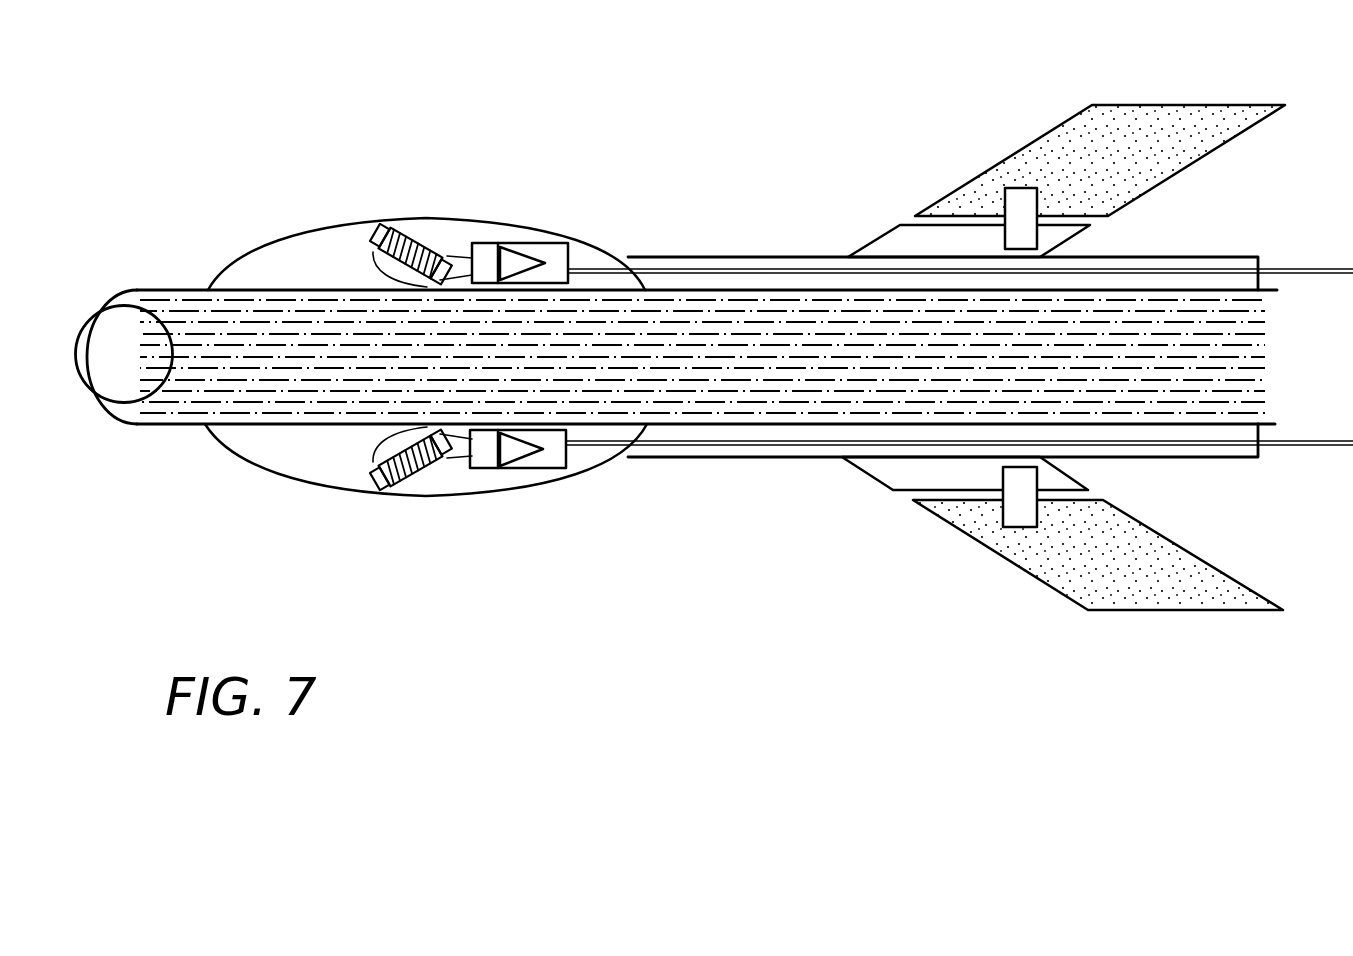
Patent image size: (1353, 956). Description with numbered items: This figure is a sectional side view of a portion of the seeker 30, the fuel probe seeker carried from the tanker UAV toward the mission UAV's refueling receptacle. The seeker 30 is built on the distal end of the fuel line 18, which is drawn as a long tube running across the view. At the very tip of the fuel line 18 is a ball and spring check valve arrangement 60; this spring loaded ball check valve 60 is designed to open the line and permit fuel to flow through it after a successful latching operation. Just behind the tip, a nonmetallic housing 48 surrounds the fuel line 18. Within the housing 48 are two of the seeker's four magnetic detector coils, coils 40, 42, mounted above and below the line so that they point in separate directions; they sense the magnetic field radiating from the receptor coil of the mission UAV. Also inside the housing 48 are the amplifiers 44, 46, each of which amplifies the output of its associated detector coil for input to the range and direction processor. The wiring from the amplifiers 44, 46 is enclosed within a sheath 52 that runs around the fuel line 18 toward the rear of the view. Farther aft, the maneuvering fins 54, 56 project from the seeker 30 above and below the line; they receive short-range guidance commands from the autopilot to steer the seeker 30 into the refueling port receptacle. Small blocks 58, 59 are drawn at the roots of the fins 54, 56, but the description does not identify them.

The seeker 30 is at (388, 81).
The fuel line 18 is at (177, 287).
The ball and spring check valve arrangement 60 is at (125, 352).
The nonmetallic housing 48 is at (267, 472).
The magnetic detector coil 40 is at (370, 232).
The magnetic detector coil 42 is at (377, 480).
The amplifier 44 is at (517, 260).
The amplifier 46 is at (520, 453).
The sheath 52 is at (735, 457).
The maneuvering fin 54 is at (1040, 135).
The maneuvering fin 56 is at (1000, 555).
The first connector block 58 is at (1022, 218).
The second connector block 59 is at (1017, 500).